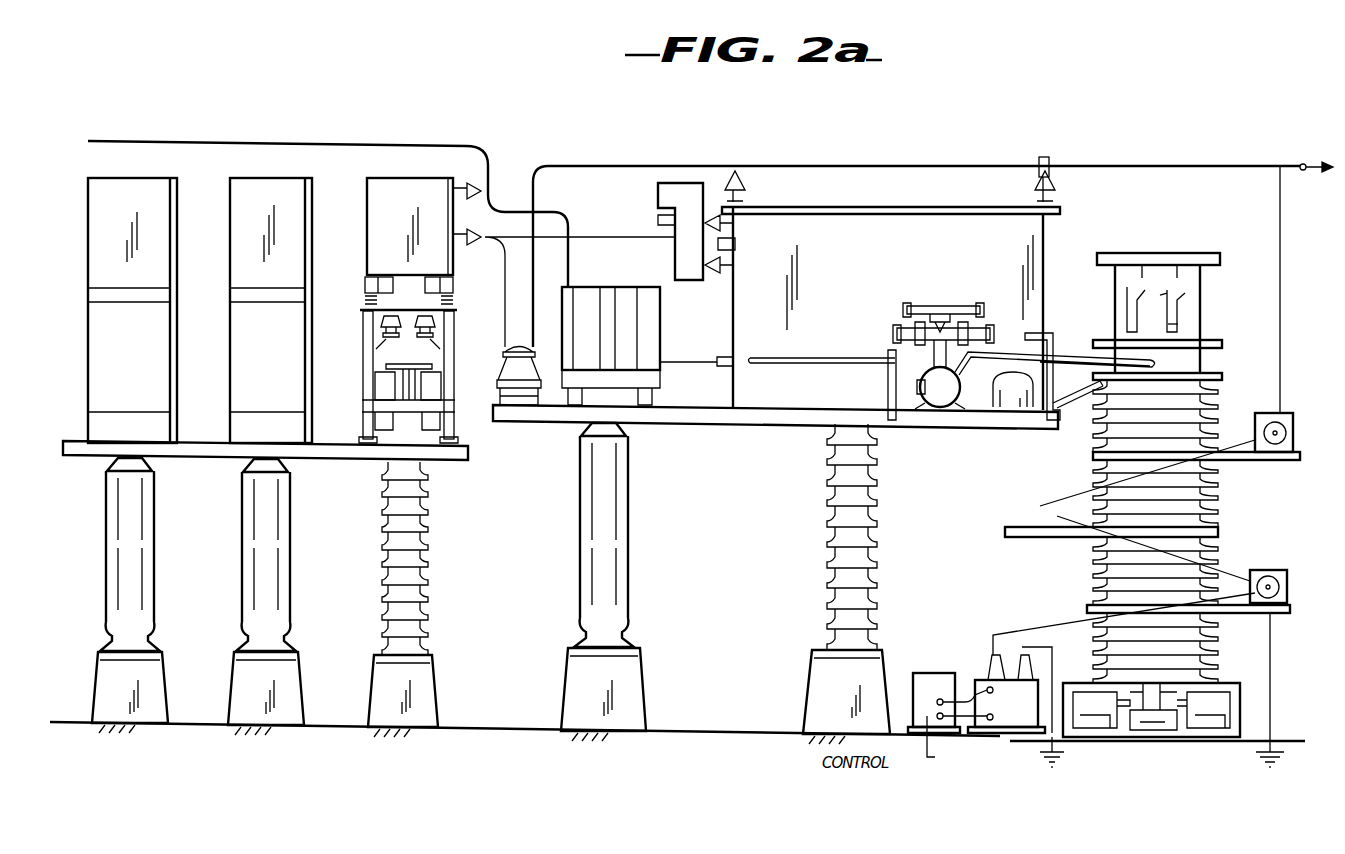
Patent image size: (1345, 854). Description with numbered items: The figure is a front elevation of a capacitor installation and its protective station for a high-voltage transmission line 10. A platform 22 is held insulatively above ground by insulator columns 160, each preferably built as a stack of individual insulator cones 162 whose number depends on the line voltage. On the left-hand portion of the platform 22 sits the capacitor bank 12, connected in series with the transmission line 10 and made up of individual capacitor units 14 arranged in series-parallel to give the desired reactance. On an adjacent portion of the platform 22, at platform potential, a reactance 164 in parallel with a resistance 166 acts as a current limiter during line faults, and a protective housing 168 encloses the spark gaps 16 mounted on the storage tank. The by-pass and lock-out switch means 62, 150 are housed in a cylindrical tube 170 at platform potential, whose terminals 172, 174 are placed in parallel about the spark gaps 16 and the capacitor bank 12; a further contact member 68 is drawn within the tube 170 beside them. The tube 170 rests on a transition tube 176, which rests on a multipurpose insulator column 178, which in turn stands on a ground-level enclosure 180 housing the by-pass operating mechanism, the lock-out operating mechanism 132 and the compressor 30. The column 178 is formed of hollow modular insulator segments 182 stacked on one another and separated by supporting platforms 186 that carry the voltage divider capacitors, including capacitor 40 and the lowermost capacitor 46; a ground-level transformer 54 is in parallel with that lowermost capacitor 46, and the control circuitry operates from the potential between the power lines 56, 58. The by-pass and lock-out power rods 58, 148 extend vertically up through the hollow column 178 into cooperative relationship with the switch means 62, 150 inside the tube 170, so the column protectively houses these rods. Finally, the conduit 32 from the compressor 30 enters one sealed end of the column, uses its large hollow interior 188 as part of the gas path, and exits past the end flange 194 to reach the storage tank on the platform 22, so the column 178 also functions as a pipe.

The transmission line 10 is at (333, 142).
The capacitor bank 12 is at (354, 219).
The capacitor units 14 is at (230, 244).
The spark gaps 16 is at (945, 305).
The platform 22 is at (358, 460).
The compressor 30 is at (1175, 720).
The conduit 32 is at (1158, 363).
The capacitor 40 is at (1292, 418).
The lowermost capacitor 46 is at (1283, 562).
The transformer 54 is at (1022, 713).
The power line 56 is at (962, 700).
The by-pass power rod 58 is at (965, 733).
The by-pass switch means 62 is at (1172, 296).
The contact member 68 is at (1178, 324).
The lock-out operating mechanism 132 is at (1098, 720).
The lock-out power rod 148 is at (1127, 304).
The lock-out switch means 150 is at (1137, 298).
The insulator columns 160 is at (167, 546).
The insulator cones 162 is at (427, 537).
The reactance 164 is at (660, 340).
The resistance 166 is at (1210, 712).
The protective housing 168 is at (836, 212).
The cylindrical tube 170 is at (1205, 305).
The terminal 172 is at (1103, 253).
The terminal 174 is at (1222, 346).
The transition tube 176 is at (1222, 362).
The multipurpose insulator column 178 is at (1229, 512).
The enclosure 180 is at (1226, 684).
The modular insulator segments 182 is at (1091, 411).
The supporting platform 186 is at (1300, 460).
The hollow interior 188 is at (1180, 425).
The end flange 194 is at (1222, 378).